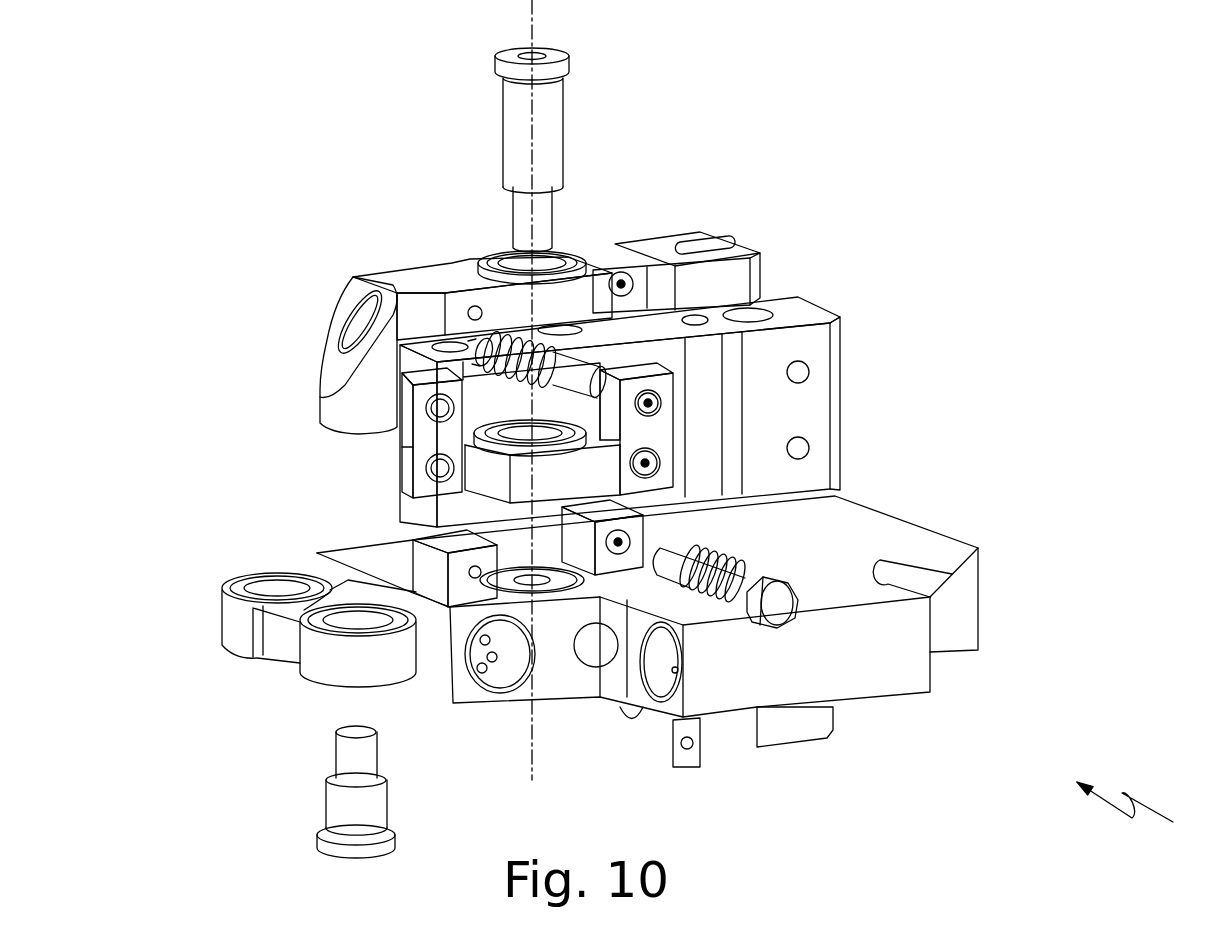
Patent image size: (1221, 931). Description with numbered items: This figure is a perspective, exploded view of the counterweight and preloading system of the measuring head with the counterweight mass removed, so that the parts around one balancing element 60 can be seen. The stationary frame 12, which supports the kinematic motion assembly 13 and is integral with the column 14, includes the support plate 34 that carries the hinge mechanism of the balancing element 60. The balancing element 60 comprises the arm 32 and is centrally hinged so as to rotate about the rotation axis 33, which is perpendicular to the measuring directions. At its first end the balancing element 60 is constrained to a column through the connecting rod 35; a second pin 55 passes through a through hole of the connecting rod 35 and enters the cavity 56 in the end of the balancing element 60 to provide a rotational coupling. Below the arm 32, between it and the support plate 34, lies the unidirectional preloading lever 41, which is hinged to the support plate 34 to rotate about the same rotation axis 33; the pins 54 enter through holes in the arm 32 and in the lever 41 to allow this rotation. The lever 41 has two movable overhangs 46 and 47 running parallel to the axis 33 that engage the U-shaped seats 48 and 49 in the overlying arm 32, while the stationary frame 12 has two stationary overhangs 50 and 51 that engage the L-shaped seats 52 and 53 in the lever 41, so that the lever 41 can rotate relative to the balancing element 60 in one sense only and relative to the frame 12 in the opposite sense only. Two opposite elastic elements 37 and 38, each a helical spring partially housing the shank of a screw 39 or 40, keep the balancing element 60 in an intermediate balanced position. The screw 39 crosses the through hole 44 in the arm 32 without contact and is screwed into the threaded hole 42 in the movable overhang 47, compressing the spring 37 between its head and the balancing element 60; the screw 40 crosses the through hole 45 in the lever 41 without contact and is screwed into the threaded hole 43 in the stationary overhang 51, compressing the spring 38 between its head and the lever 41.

The stationary frame 12 is at (400, 522).
The kinematic motion assembly 13 is at (1142, 817).
The column 14 is at (790, 347).
The arm 32 is at (655, 248).
The rotation axis 33 is at (532, 25).
The support plate 34 is at (833, 533).
The connecting rod 35 is at (245, 627).
The elastic element 37 is at (507, 363).
The elastic element 38 is at (713, 607).
The screw 39 is at (584, 372).
The screw 40 is at (775, 607).
The unidirectional preloading lever 41 is at (600, 481).
The threaded hole 42 is at (652, 403).
The threaded hole 43 is at (623, 541).
The through hole 44 is at (625, 284).
The through hole 45 is at (650, 463).
The first overhang 46 is at (418, 406).
The first overhang 47 is at (665, 387).
The seat 48 is at (430, 272).
The seat 49 is at (654, 268).
The second overhang 50 is at (475, 578).
The second overhang 51 is at (582, 543).
The seat 52 is at (470, 475).
The seat 53 is at (593, 426).
The pin 54 is at (515, 145).
The second pin 55 is at (345, 802).
The cavity 56 is at (345, 405).
The balancing element 60 is at (395, 261).